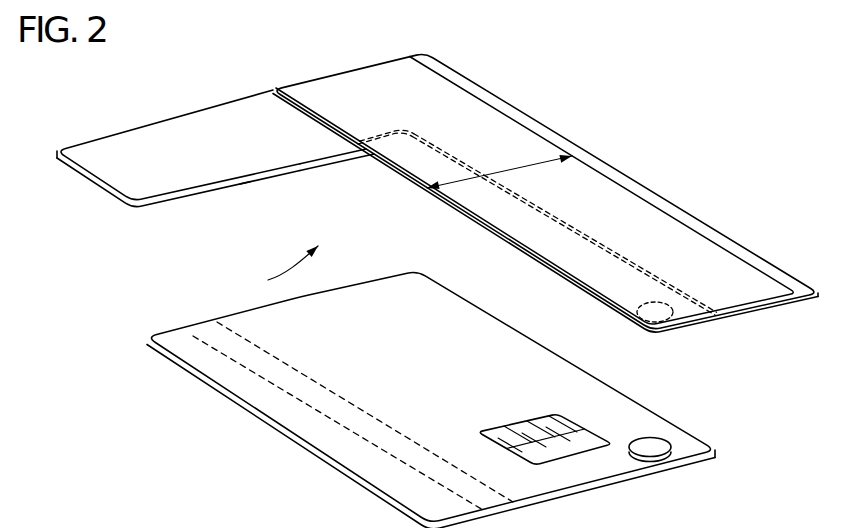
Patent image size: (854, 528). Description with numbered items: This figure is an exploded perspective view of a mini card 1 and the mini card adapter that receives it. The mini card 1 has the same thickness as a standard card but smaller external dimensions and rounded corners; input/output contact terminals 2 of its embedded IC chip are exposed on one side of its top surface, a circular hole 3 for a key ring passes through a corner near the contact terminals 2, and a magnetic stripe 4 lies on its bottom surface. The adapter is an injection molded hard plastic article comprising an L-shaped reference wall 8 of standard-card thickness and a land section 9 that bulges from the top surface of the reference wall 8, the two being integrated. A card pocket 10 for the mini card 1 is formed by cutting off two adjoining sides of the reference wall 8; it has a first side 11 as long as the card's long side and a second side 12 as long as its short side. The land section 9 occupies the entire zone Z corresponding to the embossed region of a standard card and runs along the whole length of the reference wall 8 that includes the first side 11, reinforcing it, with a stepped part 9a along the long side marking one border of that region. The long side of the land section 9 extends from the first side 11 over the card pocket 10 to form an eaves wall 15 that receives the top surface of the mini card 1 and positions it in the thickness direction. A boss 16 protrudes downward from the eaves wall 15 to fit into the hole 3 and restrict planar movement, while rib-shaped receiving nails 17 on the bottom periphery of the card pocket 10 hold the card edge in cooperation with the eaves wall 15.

The mini card 1 is at (198, 322).
The input/output contact terminals 2 is at (561, 418).
The circular hole 3 is at (652, 438).
The magnetic stripe 4 is at (377, 418).
The reference wall 8 is at (208, 124).
The land section 9 is at (600, 196).
The stepped part 9a is at (710, 239).
The card pocket 10 is at (279, 270).
The first side 11 is at (533, 208).
The second side 12 is at (340, 163).
The eaves wall 15 is at (418, 163).
The boss 16 is at (660, 327).
The receiving nail 17 is at (250, 188).
The zone Z is at (514, 165).